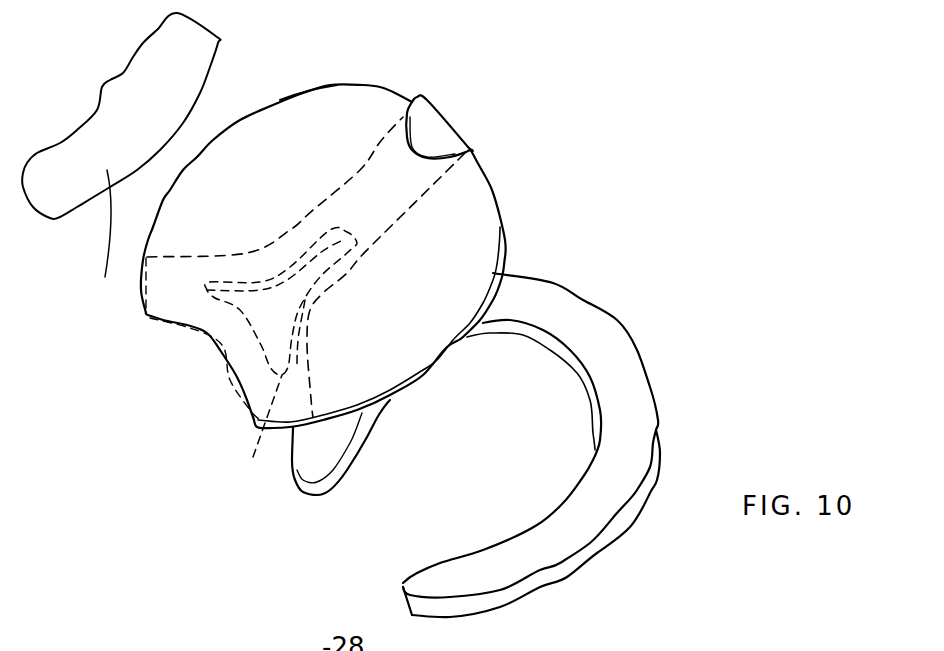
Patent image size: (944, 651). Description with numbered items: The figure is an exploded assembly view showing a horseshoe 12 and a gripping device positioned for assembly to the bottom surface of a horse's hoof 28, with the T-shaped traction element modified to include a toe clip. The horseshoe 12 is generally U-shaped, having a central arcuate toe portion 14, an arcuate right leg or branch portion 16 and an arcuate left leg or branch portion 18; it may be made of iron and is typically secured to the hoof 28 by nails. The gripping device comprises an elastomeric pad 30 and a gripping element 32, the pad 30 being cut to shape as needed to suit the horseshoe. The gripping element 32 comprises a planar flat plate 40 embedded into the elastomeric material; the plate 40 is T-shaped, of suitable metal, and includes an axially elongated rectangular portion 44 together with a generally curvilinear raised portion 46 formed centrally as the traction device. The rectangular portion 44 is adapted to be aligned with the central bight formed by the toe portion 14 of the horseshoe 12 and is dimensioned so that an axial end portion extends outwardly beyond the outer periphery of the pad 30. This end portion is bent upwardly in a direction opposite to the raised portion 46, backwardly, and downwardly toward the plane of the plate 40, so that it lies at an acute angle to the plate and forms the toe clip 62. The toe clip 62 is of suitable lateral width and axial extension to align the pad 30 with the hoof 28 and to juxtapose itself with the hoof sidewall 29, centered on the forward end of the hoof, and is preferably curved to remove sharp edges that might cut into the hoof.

The horseshoe 12 is at (631, 321).
The central arcuate toe portion 14 is at (718, 350).
The arcuate right leg or branch portion 16 is at (313, 458).
The arcuate left leg or branch portion 18 is at (427, 585).
The horse's hoof 28 is at (79, 192).
The hoof sidewall 29 is at (106, 246).
The elastomeric pad 30 is at (266, 130).
The gripping element 32 is at (314, 84).
The planar flat plate 40 is at (355, 150).
The rectangular portion 44 is at (388, 124).
The curvilinear raised portion 46 is at (248, 440).
The toe clip 62 is at (428, 123).